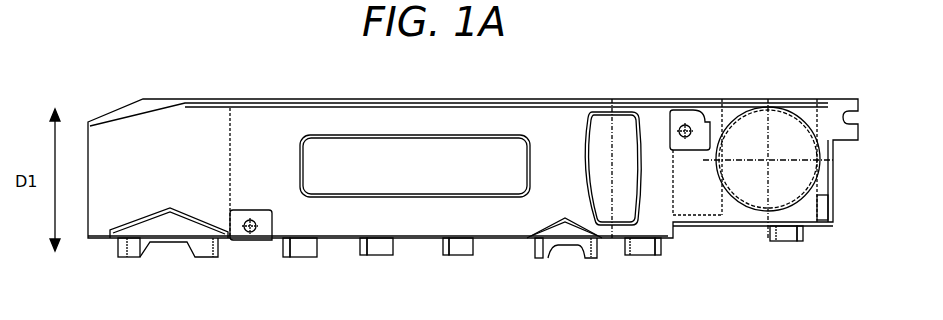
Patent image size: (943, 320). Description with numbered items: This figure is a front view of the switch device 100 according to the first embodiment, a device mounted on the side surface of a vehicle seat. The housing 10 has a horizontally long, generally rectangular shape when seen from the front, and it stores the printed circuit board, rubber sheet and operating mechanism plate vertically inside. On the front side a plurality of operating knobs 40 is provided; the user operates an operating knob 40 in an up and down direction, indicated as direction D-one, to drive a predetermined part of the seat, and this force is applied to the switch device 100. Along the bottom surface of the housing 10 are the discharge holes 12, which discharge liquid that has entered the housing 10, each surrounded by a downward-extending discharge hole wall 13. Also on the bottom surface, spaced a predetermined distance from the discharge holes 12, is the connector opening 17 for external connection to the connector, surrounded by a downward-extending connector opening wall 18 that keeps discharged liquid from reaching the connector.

The switch device 100 is at (174, 65).
The housing 10 is at (267, 103).
The operating knob 40 is at (345, 137).
The discharge hole 12 is at (300, 258).
The discharge hole wall 13 is at (283, 247).
The connector opening 17 is at (170, 243).
The connector opening wall 18 is at (125, 259).